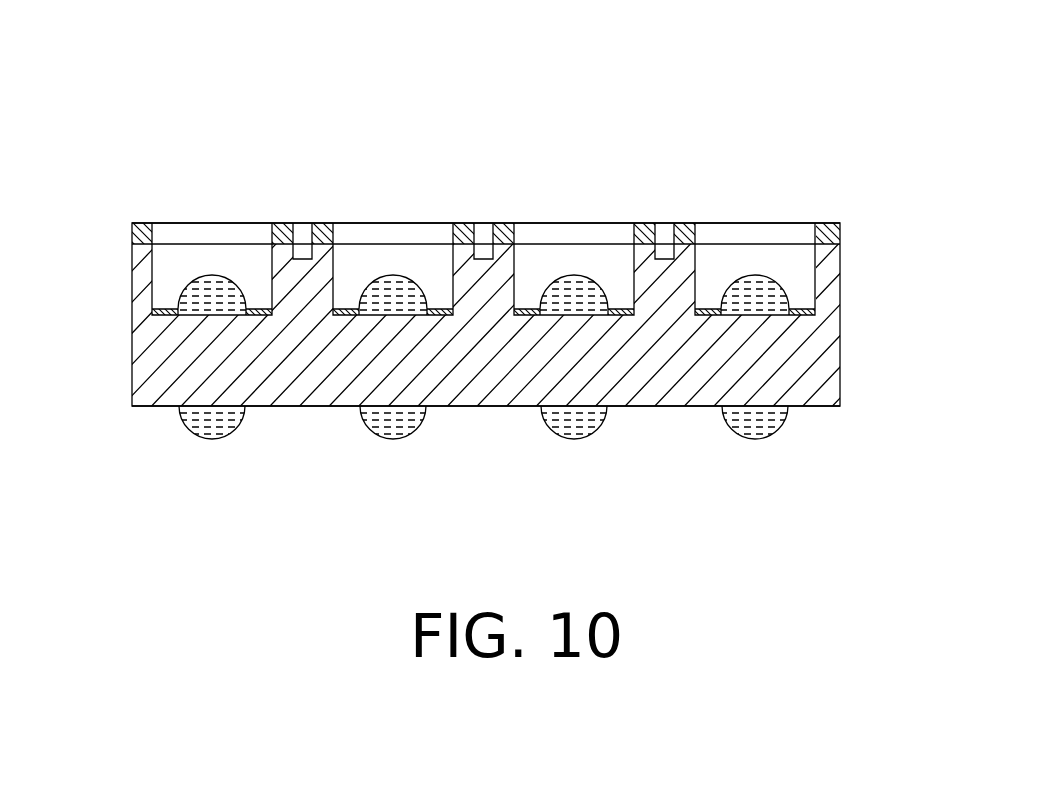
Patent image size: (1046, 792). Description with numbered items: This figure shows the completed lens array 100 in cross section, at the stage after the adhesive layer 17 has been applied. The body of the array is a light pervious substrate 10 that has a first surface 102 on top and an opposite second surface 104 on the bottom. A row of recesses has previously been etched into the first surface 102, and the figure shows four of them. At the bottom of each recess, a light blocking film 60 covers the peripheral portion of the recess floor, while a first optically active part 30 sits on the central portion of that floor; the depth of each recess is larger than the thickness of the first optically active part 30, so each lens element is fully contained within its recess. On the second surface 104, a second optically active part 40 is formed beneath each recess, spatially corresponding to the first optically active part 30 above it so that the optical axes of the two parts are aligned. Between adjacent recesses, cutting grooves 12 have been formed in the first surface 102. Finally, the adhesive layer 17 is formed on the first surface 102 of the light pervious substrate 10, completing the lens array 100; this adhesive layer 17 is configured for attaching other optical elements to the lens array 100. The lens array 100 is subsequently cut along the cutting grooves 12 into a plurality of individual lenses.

The lens array 100 is at (511, 103).
The light pervious substrate 10 is at (834, 353).
The first surface 102 is at (833, 224).
The second surface 104 is at (815, 406).
The cutting grooves 12 is at (302, 240).
The adhesive layer 17 is at (687, 224).
The first optically active part 30 is at (778, 290).
The second optically active part 40 is at (760, 418).
The light blocking film 60 is at (155, 313).